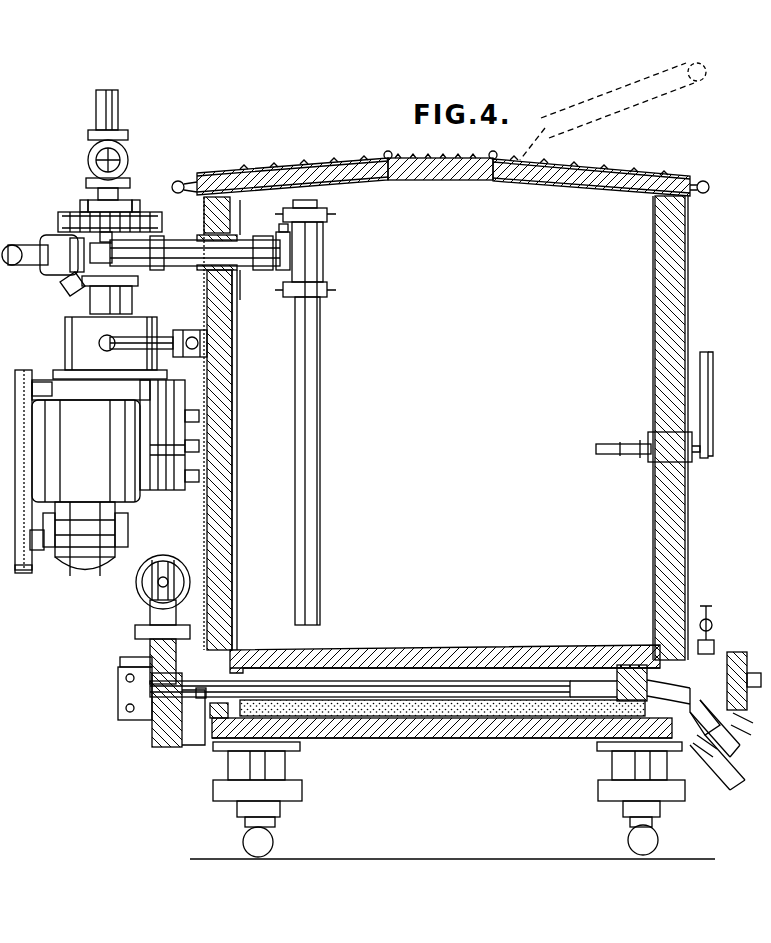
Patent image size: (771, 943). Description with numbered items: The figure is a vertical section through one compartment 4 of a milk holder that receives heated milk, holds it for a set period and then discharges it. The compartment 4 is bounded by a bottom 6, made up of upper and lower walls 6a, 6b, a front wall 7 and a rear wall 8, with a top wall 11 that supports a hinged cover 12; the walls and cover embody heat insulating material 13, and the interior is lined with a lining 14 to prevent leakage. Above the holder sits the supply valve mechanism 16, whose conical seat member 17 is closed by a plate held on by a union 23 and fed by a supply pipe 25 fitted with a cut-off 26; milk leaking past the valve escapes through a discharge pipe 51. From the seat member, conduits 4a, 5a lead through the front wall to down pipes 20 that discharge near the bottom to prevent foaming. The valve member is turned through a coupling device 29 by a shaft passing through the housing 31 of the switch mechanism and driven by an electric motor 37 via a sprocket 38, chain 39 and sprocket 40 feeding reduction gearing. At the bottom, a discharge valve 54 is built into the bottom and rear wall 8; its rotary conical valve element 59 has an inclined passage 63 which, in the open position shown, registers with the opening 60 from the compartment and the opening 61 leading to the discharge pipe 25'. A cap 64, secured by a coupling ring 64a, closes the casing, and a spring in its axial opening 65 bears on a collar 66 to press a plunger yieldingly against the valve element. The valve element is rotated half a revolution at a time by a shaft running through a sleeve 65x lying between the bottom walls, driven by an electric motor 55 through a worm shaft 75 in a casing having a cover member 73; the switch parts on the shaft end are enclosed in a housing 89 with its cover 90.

The compartment 4 is at (377, 375).
The conduit 4a is at (245, 252).
The conduit 5a is at (30, 247).
The bottom 6 is at (452, 740).
The upper bottom wall 6a is at (370, 656).
The lower bottom wall 6b is at (434, 738).
The front wall 7 is at (238, 553).
The rear wall 8 is at (686, 495).
The top wall 11 is at (470, 181).
The cover 12 is at (600, 183).
The heat insulating material 13 is at (412, 180).
The lining 14 is at (652, 515).
The valve mechanism 16 is at (96, 241).
The seat member 17 is at (84, 286).
The down pipe 20 is at (326, 341).
The union 23 is at (68, 212).
The supply pipe 25 is at (128, 110).
The discharge pipe 25' is at (717, 762).
The cut-off 26 is at (130, 151).
The coupling device 29 is at (132, 300).
The housing 31 is at (130, 348).
The electric motor 37 is at (82, 580).
The sprocket 38 is at (38, 552).
The chain 39 is at (34, 441).
The sprocket 40 is at (34, 382).
The discharge pipe 51 is at (62, 290).
The discharge valve 54 is at (748, 718).
The electric motor 55 is at (175, 565).
The valve element 59 is at (590, 740).
The opening 60 is at (638, 665).
The opening 61 is at (713, 720).
The passage 63 is at (668, 687).
The cap 64 is at (742, 654).
The coupling ring 64a is at (720, 650).
The axial opening 65 is at (758, 673).
The sleeve 65x is at (352, 700).
The collar 66 is at (212, 722).
The cover member 73 is at (135, 630).
The shaft 75 is at (150, 608).
The housing 89 is at (128, 658).
The cover 90 is at (118, 668).